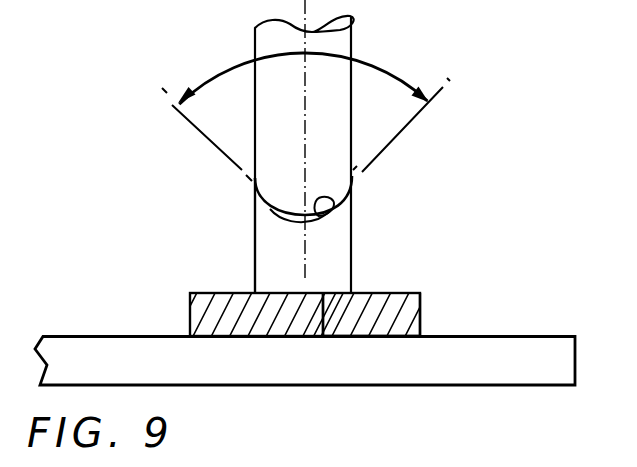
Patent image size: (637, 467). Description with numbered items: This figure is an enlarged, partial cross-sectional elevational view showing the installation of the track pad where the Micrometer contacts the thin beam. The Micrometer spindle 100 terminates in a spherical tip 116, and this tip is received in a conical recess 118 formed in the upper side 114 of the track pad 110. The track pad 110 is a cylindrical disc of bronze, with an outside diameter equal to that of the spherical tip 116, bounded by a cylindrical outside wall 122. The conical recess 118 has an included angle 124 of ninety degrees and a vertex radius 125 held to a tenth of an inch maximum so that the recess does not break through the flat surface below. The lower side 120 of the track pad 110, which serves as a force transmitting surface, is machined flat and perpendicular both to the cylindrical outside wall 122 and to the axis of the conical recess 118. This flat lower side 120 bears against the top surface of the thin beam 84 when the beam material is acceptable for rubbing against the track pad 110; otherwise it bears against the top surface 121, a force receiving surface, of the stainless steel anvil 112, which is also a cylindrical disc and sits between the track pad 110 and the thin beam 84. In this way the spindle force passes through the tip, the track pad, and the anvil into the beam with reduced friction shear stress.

The thin beam 84 is at (542, 334).
The Micrometer spindle 100 is at (345, 30).
The track pad 110 is at (337, 281).
The anvil 112 is at (400, 320).
The upper side 114 is at (352, 184).
The spherical tip 116 is at (271, 210).
The conical recess 118 is at (330, 197).
The lower side 120 is at (272, 293).
The top surface 121 is at (323, 336).
The cylindrical outside wall 122 is at (253, 240).
The angle 124 is at (232, 70).
The vertex radius 125 is at (306, 223).